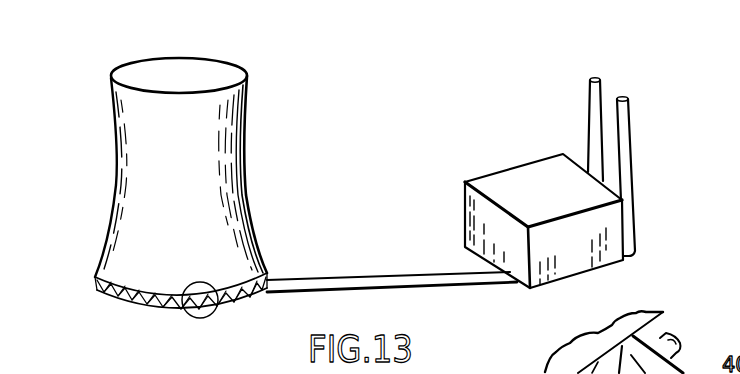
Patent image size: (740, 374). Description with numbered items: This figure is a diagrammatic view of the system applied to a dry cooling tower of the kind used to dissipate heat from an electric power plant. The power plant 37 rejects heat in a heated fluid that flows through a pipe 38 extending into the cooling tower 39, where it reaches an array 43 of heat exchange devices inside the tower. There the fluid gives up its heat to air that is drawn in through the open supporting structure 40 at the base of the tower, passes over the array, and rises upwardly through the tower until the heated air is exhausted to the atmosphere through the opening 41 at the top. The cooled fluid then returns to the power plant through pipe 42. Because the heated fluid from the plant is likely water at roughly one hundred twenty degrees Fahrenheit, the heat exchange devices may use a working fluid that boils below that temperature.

The power plant 37 is at (518, 158).
The pipe 38 is at (392, 278).
The cooling tower 39 is at (178, 185).
The open supporting structure 40 is at (103, 296).
The opening 41 is at (199, 66).
The pipe 42 is at (409, 287).
The array of heat exchange devices 43 is at (204, 321).